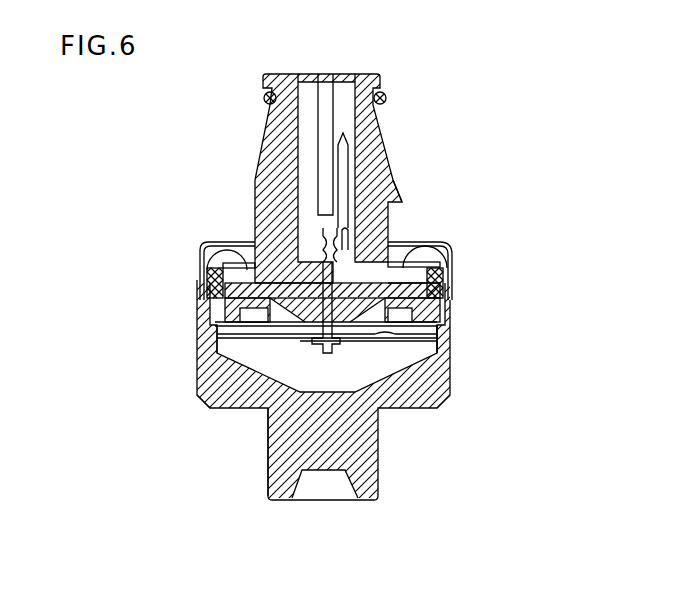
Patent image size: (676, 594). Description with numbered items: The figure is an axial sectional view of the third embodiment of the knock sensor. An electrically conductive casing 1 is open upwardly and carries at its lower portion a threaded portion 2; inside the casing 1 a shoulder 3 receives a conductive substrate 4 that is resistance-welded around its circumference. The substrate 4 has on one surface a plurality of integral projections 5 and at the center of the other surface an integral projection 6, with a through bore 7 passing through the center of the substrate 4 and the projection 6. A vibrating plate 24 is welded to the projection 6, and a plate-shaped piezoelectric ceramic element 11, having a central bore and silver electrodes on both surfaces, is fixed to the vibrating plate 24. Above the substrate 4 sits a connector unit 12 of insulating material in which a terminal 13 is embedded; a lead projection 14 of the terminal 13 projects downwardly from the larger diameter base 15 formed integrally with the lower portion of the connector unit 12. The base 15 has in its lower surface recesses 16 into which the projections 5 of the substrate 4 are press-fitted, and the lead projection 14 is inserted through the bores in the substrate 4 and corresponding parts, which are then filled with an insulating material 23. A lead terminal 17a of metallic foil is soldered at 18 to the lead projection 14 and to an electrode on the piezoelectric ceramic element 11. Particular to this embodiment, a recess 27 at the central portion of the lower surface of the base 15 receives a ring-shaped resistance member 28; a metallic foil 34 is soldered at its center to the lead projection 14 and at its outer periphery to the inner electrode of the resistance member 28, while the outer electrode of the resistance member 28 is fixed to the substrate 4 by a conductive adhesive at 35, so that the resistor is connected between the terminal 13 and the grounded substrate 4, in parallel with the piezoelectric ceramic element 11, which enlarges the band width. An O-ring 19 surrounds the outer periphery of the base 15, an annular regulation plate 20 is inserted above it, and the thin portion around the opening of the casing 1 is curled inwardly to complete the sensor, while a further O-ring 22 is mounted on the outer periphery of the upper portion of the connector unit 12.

The casing 1 is at (440, 392).
The threaded portion 2 is at (377, 482).
The shoulder 3 is at (440, 322).
The conductive substrate 4 is at (437, 304).
The projections 5 is at (212, 274).
The projection 6 is at (295, 334).
The through bore 7 is at (292, 331).
The piezoelectric ceramic element 11 is at (334, 347).
The connector unit 12 is at (372, 143).
The terminal 13 is at (336, 146).
The lead projection 14 is at (208, 399).
The base 15 is at (428, 262).
The recesses 16 is at (255, 285).
The lead terminal 17a is at (386, 410).
The solder 18 is at (266, 426).
The O-ring 19 is at (235, 289).
The regulation plate 20 is at (214, 247).
The O-ring 22 is at (393, 93).
The insulating material 23 is at (408, 358).
The vibrating plate 24 is at (400, 325).
The recess 27 is at (400, 212).
The resistance member 28 is at (292, 287).
The metallic foil 34 is at (442, 316).
The conductive adhesive 35 is at (412, 262).